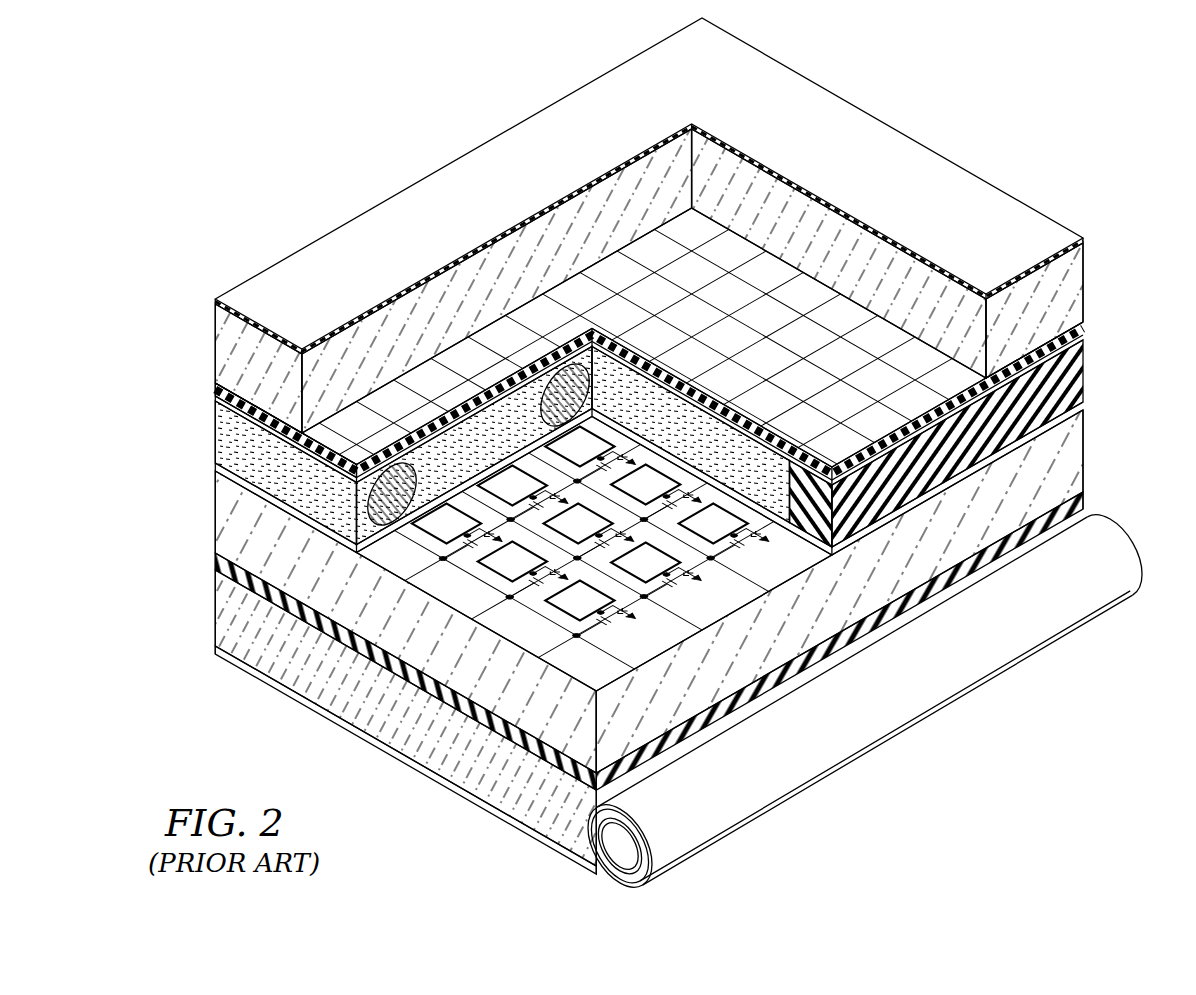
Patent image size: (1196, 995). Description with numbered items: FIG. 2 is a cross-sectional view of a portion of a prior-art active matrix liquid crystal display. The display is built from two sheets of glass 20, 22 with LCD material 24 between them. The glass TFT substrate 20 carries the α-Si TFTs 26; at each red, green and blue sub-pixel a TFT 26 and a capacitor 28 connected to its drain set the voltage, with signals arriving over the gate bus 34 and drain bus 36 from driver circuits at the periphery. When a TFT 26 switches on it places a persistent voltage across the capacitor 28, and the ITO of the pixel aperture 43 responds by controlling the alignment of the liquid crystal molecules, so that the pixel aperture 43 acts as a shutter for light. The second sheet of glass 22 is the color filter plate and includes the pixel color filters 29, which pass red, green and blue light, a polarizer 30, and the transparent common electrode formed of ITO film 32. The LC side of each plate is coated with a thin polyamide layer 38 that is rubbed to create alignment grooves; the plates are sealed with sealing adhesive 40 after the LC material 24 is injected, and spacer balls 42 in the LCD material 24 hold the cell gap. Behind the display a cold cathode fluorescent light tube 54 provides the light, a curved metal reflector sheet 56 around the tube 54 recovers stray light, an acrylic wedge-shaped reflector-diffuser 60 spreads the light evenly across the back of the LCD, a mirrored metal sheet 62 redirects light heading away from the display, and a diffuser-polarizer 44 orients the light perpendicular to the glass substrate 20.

The sheet of glass 20 is at (1083, 451).
The sheet of glass 22 is at (1083, 292).
The LCD material 24 is at (215, 436).
The TFT 26 is at (686, 587).
The capacitor 28 is at (765, 537).
The color filter 29 is at (1083, 332).
The polarizer 30 is at (1083, 248).
The ITO film 32 is at (215, 391).
The gate bus 34 is at (652, 650).
The drain bus 36 is at (504, 622).
The polyamide layer 38 is at (1083, 338).
The sealing adhesive 40 is at (1083, 372).
The spacer balls 42 is at (597, 396).
The pixel aperture 43 is at (560, 614).
The diffuser-polarizer 44 is at (1083, 500).
The fluorescent light tube 54 is at (600, 853).
The metal reflector sheet 56 is at (1135, 572).
The reflector-diffuser 60 is at (215, 604).
The mirrored metal sheet 62 is at (215, 650).